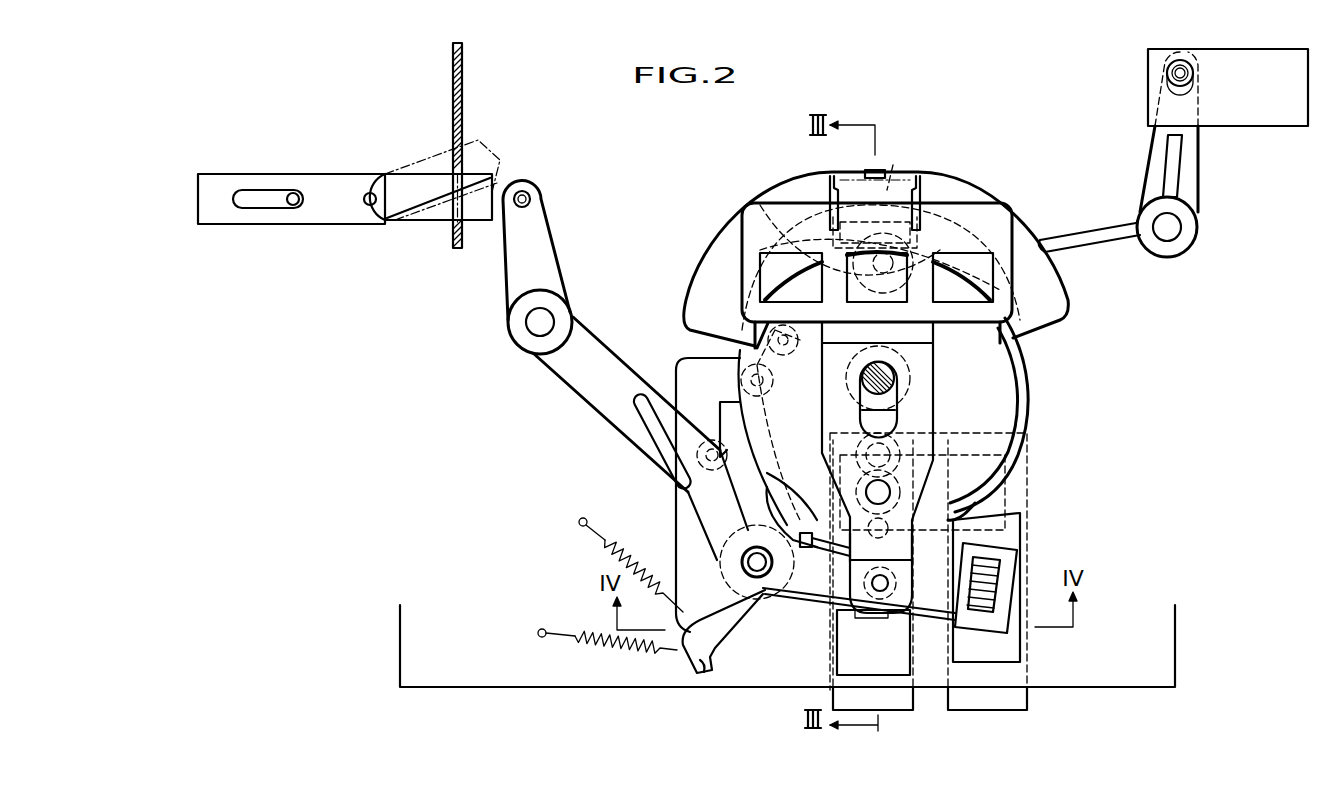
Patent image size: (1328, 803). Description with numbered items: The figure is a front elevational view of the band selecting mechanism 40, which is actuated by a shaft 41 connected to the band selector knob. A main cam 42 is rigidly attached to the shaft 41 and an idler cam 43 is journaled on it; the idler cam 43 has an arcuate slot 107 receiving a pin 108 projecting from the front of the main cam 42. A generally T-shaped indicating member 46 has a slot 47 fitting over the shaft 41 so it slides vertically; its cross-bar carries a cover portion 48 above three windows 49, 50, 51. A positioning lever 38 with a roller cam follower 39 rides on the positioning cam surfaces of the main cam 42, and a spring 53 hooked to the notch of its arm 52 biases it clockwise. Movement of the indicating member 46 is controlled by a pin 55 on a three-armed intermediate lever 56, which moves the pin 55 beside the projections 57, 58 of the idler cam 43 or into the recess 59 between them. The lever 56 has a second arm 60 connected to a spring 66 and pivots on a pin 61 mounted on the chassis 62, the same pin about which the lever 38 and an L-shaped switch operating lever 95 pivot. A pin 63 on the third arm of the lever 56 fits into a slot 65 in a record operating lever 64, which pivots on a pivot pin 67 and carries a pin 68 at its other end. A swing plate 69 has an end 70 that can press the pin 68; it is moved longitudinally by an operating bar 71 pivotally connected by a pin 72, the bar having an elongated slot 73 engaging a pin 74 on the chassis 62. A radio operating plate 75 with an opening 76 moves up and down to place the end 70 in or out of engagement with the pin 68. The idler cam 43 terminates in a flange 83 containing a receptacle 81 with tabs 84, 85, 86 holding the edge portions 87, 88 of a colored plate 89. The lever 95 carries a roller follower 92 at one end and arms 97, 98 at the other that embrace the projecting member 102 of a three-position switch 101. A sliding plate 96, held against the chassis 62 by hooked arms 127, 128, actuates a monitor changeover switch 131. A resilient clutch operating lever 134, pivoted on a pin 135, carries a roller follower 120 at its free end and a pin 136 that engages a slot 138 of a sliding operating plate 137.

The positioning lever 38 is at (680, 532).
The roller cam follower 39 is at (770, 405).
The band selecting mechanism 40 is at (724, 217).
The shaft 41 is at (892, 384).
The main cam 42 is at (1030, 426).
The idler cam 43 is at (1010, 388).
The indicating member 46 is at (936, 386).
The slot 47 is at (862, 414).
The cover plate 48 is at (770, 206).
The window 49 is at (812, 298).
The window 50 is at (888, 298).
The window 51 is at (950, 294).
The arm 52 is at (712, 666).
The spring 53 is at (584, 626).
The pin 55 is at (878, 592).
The intermediate lever 56 is at (790, 600).
The projection 57 is at (806, 540).
The projection 58 is at (972, 522).
The recess 59 is at (780, 478).
The second arm 60 is at (697, 662).
The pin 61 is at (742, 562).
The chassis 62 is at (1136, 688).
The pin 63 is at (686, 474).
The record operating lever 64 is at (576, 384).
The slot 65 is at (656, 395).
The spring 66 is at (612, 556).
The pivot pin 67 is at (548, 322).
The pin 68 is at (526, 197).
The swing plate 69 is at (425, 186).
The end 70 is at (492, 190).
The operating bar 71 is at (268, 226).
The pin 72 is at (370, 193).
The elongated slot 73 is at (250, 190).
The pin 74 is at (293, 193).
The radio operating plate 75 is at (462, 100).
The opening 76 is at (455, 228).
The receptacle 81 is at (917, 162).
The flange 83 is at (1068, 300).
The tab 84 is at (868, 172).
The tab 85 is at (859, 228).
The tab 86 is at (922, 207).
The edge portion 87 is at (832, 188).
The edge portion 88 is at (921, 190).
The colored plate 89 is at (893, 164).
The roller follower 92 is at (759, 397).
The switch operating lever 95 is at (718, 420).
The sliding plate 96 is at (842, 666).
The arm 97 is at (990, 562).
The arm 98 is at (980, 612).
The switch 101 is at (1027, 700).
The projecting member 102 is at (1000, 588).
The arcuate slot 107 is at (938, 428).
The pin 108 is at (938, 456).
The roller follower 120 is at (880, 252).
The arm 127 is at (805, 624).
The arm 128 is at (928, 640).
The monitor changeover switch 131 is at (836, 698).
The clutch operating lever 134 is at (1070, 240).
The pin 135 is at (1176, 232).
The pin 136 is at (1167, 73).
The sliding operating plate 137 is at (1270, 120).
The slot 138 is at (1180, 90).